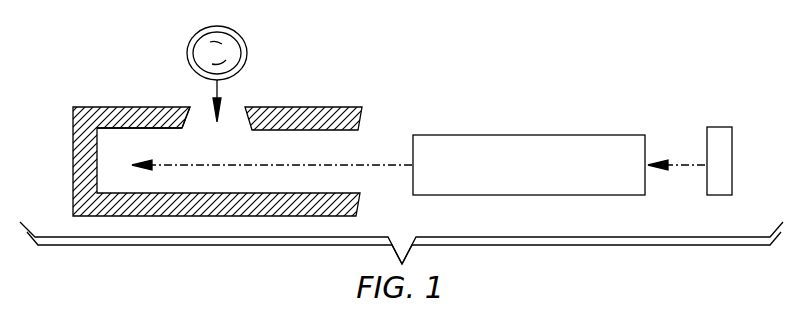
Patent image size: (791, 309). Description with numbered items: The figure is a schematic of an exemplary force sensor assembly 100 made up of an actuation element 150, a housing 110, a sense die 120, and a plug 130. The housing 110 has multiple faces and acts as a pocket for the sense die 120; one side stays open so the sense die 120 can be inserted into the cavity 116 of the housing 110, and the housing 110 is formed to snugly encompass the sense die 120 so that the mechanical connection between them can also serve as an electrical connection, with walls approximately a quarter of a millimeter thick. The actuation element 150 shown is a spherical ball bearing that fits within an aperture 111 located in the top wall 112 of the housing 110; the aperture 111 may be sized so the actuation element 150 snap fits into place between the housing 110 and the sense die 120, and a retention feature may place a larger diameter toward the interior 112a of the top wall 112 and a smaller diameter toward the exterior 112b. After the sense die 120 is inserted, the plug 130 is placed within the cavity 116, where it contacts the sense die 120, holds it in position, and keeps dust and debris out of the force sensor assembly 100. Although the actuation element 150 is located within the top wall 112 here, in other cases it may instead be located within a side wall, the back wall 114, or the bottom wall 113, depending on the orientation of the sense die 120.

The force sensor assembly 100 is at (126, 52).
The housing 110 is at (316, 98).
The aperture 111 is at (202, 113).
The top wall 112 is at (188, 148).
The interior of the top wall 112a is at (143, 128).
The exterior of the top wall 112b is at (130, 111).
The bottom wall 113 is at (240, 212).
The back wall 114 is at (85, 157).
The cavity 116 is at (364, 143).
The sense die 120 is at (515, 150).
The plug 130 is at (722, 138).
The actuation element 150 is at (245, 34).